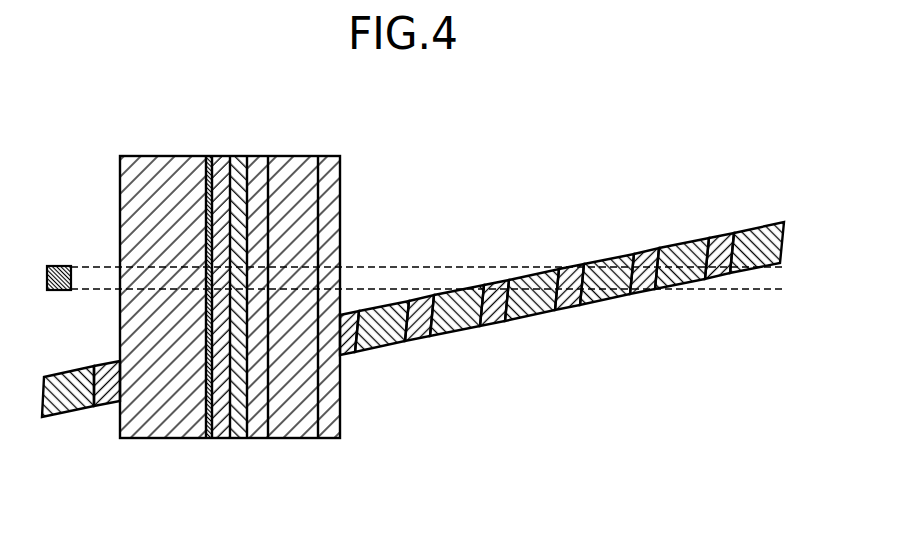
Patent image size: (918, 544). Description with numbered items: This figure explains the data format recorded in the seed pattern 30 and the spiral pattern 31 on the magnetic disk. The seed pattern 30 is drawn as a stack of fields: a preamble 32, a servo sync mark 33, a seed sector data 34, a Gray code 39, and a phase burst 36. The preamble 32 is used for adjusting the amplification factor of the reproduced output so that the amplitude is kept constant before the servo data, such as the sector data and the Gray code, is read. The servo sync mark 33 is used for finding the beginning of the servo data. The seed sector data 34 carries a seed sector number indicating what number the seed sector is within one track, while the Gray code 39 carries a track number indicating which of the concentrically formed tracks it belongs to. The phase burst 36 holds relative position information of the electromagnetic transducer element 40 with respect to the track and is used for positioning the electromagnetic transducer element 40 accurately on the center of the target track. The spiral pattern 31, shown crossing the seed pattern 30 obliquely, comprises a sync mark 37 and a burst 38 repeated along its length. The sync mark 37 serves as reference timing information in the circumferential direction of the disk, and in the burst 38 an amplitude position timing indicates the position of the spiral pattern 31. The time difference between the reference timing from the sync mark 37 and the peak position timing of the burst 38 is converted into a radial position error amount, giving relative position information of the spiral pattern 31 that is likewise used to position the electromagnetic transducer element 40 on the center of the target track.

The seed pattern 30 is at (293, 146).
The spiral pattern 31 is at (746, 218).
The preamble 32 is at (150, 438).
The servo sync mark 33 is at (208, 438).
The seed sector data 34 is at (225, 438).
The phase burst 36 is at (244, 444).
The sync mark 37 is at (573, 307).
The burst 38 is at (670, 286).
The Gray code 39 is at (236, 438).
The electromagnetic transducer element 40 is at (58, 266).